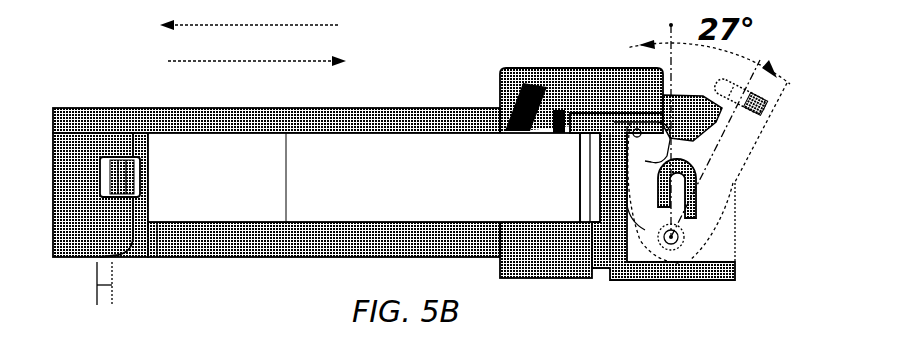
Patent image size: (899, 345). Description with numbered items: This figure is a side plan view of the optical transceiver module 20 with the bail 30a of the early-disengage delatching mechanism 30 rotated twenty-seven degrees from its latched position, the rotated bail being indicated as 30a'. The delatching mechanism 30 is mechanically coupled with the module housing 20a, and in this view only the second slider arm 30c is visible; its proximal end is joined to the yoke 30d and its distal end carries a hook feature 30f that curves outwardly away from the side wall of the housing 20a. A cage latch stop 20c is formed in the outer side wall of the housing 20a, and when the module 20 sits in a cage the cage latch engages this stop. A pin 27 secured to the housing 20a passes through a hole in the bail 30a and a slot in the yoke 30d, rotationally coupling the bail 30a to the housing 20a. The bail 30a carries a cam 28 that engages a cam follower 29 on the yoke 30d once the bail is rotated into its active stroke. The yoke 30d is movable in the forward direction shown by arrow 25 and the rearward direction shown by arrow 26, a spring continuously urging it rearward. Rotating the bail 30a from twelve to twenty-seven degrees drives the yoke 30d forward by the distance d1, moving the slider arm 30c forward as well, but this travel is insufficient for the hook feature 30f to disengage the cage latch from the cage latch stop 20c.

The optical transceiver module 20 is at (148, 97).
The module housing 20a is at (460, 107).
The cage latch stop 20c is at (105, 198).
The arrow representing forward direction 25 is at (272, 63).
The arrow representing rearward direction 26 is at (276, 29).
The pin 27 is at (684, 238).
The cam 28 is at (688, 177).
The cam follower 29 is at (698, 176).
The early-disengage delatching mechanism 30 is at (660, 290).
The bail 30a is at (736, 117).
The bail in rotated position 30a' is at (722, 83).
The second slider arm 30c is at (352, 180).
The yoke 30d is at (665, 268).
The hook feature 30f is at (128, 177).
The distance d1 is at (106, 300).